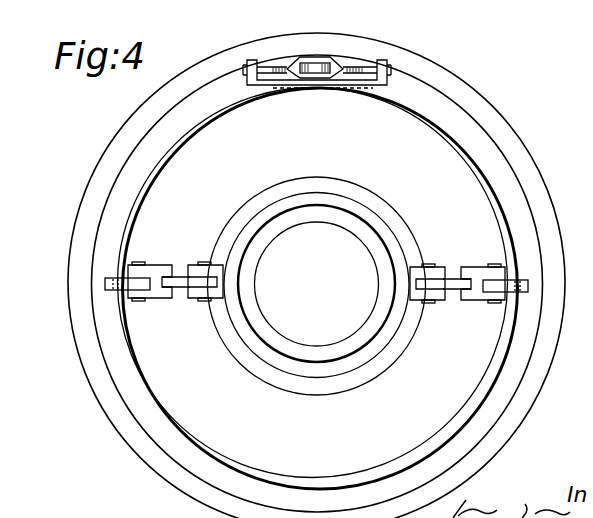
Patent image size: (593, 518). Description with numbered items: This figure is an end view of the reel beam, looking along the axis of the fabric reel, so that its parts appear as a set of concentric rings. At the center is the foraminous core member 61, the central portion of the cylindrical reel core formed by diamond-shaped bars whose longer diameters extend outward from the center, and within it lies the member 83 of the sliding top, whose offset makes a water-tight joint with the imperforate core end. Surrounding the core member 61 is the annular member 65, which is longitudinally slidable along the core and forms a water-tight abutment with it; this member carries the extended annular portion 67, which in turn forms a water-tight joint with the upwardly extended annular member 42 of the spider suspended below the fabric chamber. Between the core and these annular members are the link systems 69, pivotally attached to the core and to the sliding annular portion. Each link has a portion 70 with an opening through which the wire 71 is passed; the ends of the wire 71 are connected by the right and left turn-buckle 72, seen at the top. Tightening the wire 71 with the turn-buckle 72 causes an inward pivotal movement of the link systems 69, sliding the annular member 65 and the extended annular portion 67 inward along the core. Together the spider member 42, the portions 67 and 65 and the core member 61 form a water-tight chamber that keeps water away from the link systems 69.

The upwardly extended annular member 42 is at (87, 222).
The extended annular portion 67 is at (131, 171).
The wire 71 is at (448, 132).
The turn-buckle 72 is at (337, 63).
The portion of link 70 is at (105, 282).
The link system 69 is at (180, 287).
The annular member 65 is at (268, 188).
The core member 61 is at (238, 240).
The member 83 is at (256, 256).